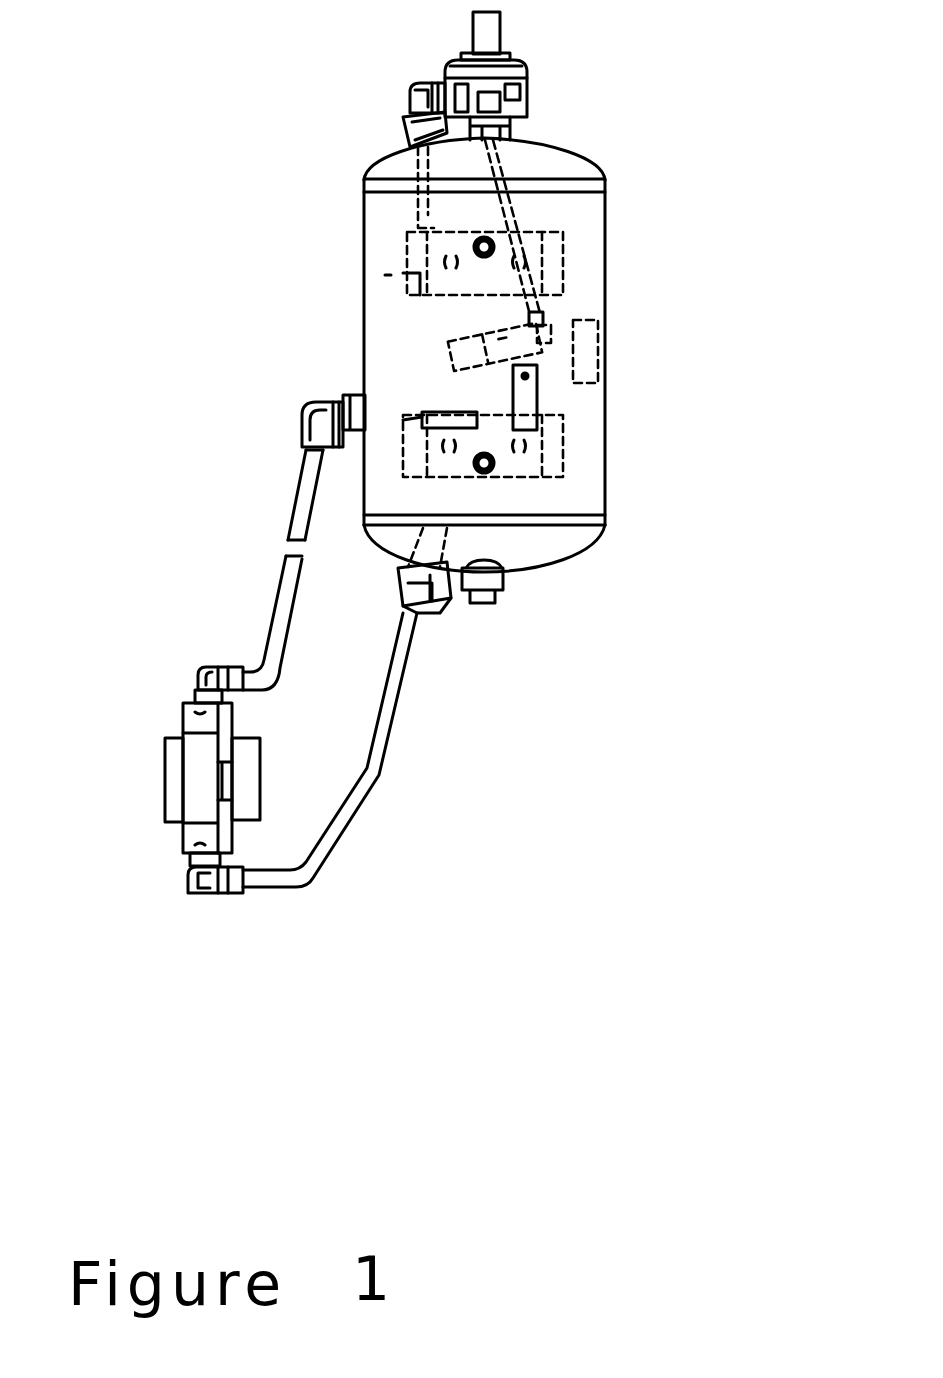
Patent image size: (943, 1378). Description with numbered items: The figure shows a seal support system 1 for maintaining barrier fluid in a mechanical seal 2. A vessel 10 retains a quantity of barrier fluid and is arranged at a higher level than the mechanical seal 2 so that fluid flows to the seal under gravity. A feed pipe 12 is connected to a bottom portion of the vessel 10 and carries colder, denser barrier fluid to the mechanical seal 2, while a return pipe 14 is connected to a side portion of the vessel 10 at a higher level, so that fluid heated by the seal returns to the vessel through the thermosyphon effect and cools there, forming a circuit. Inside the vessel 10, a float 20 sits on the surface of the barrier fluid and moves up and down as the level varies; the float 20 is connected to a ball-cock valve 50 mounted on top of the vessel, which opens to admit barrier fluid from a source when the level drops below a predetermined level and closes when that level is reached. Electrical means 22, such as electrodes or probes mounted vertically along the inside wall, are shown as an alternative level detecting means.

The seal support system 1 is at (227, 93).
The mechanical seal 2 is at (137, 703).
The vessel 10 is at (605, 392).
The feed pipe 12 is at (370, 763).
The return pipe 14 is at (273, 600).
The float 20 is at (452, 341).
The electrical means 22 is at (603, 337).
The ball-cock valve 50 is at (470, 98).